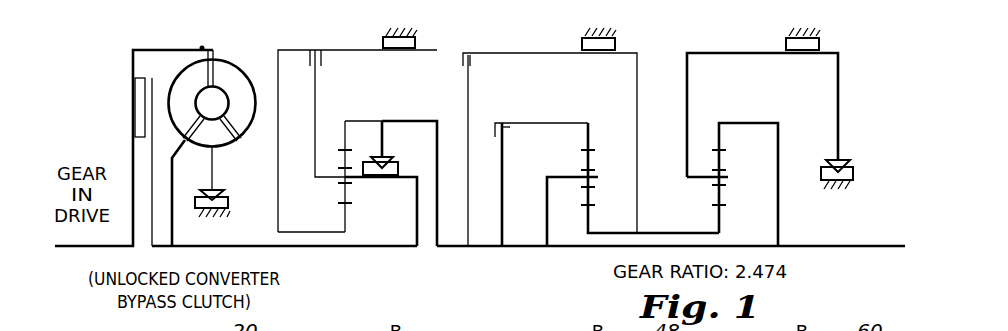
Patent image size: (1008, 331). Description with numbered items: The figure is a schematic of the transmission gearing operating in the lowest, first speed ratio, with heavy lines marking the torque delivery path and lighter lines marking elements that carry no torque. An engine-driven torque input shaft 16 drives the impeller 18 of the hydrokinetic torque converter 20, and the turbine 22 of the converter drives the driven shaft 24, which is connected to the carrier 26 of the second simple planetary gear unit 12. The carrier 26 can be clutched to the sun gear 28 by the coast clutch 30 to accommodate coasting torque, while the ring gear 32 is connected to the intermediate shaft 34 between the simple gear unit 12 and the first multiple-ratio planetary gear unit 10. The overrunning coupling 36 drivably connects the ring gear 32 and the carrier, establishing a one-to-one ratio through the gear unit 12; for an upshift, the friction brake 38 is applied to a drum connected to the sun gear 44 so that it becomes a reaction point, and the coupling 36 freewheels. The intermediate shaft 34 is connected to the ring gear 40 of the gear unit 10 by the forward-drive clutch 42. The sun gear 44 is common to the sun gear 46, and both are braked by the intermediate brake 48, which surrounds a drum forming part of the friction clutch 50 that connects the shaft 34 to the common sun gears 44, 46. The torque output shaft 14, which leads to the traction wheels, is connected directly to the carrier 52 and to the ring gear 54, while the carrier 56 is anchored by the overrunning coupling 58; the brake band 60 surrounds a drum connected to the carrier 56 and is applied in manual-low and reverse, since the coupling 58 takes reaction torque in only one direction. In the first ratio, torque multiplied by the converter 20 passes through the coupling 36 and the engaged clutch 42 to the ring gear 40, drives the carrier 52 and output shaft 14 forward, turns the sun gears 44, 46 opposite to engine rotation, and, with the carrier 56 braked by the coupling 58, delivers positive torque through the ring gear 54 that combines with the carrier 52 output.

The first multiple-ratio planetary gear unit 10 is at (686, 232).
The second simple planetary gear unit 12 is at (333, 180).
The driven shaft 14 is at (797, 245).
The engine-driven torque input shaft 16 is at (72, 247).
The impeller 18 is at (245, 125).
The hydrokinetic torque converter 20 is at (202, 46).
The turbine 22 is at (168, 118).
The driven shaft 24 is at (305, 247).
The carrier 26 is at (395, 178).
The sun gear 28 is at (349, 205).
The coast clutch 30 is at (323, 57).
The ring gear 32 is at (345, 148).
The intermediate shaft 34 is at (481, 247).
The overrunning coupling 36 is at (378, 158).
The friction brake 38 is at (403, 48).
The ring gear 40 is at (590, 148).
The forward-drive clutch 42 is at (507, 130).
The sun gear 44 is at (592, 207).
The sun gear 46 is at (722, 207).
The intermediate brake 48 is at (617, 43).
The friction clutch 50 is at (477, 58).
The carrier 52 is at (562, 178).
The ring gear 54 is at (735, 127).
The carrier 56 is at (698, 176).
The overrunning coupling 58 is at (855, 175).
The brake band 60 is at (822, 43).